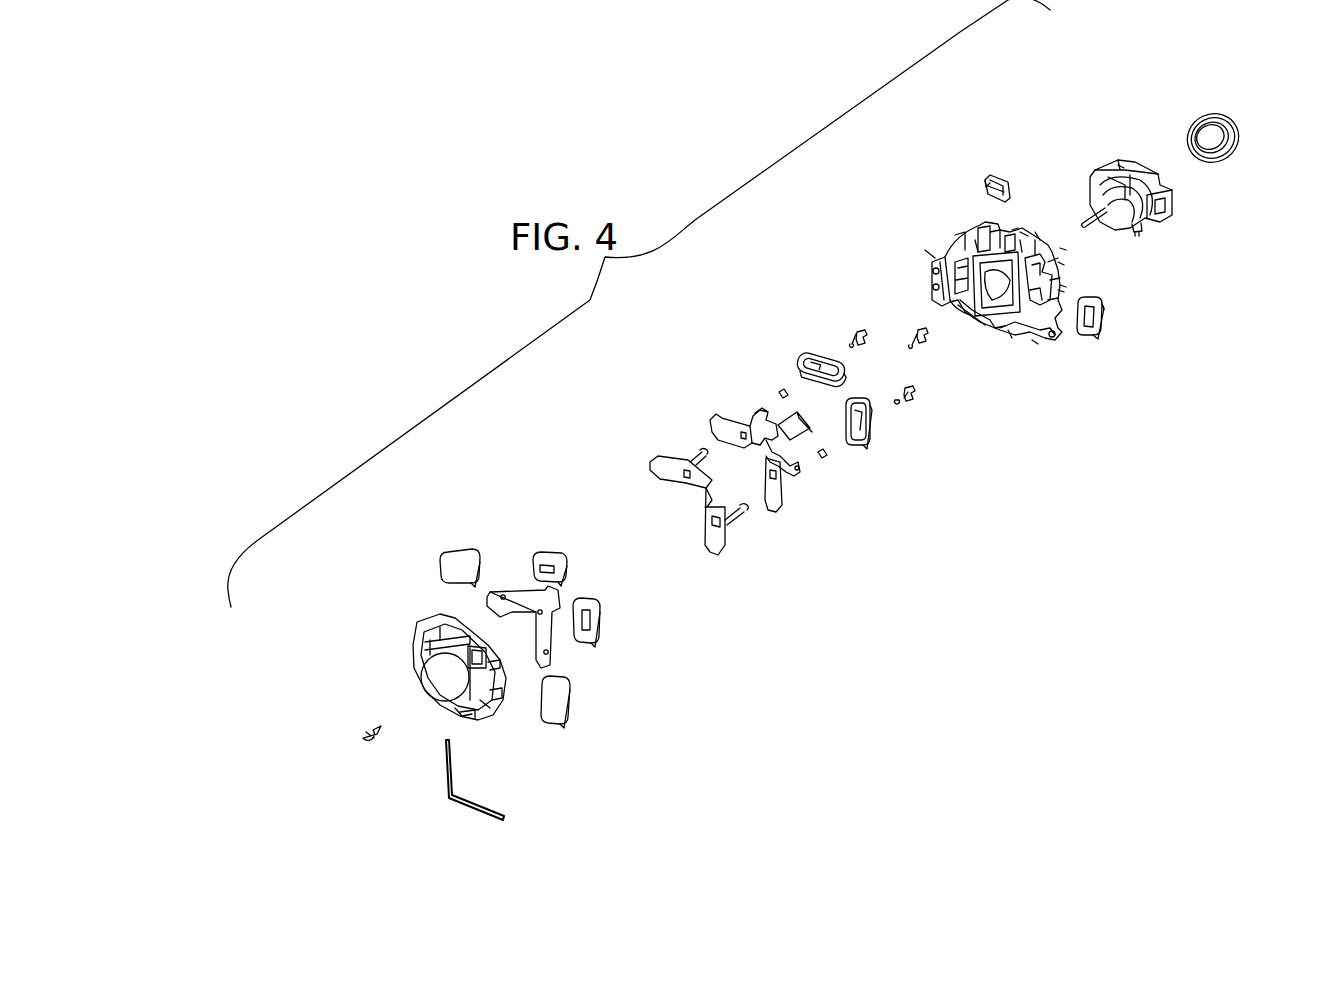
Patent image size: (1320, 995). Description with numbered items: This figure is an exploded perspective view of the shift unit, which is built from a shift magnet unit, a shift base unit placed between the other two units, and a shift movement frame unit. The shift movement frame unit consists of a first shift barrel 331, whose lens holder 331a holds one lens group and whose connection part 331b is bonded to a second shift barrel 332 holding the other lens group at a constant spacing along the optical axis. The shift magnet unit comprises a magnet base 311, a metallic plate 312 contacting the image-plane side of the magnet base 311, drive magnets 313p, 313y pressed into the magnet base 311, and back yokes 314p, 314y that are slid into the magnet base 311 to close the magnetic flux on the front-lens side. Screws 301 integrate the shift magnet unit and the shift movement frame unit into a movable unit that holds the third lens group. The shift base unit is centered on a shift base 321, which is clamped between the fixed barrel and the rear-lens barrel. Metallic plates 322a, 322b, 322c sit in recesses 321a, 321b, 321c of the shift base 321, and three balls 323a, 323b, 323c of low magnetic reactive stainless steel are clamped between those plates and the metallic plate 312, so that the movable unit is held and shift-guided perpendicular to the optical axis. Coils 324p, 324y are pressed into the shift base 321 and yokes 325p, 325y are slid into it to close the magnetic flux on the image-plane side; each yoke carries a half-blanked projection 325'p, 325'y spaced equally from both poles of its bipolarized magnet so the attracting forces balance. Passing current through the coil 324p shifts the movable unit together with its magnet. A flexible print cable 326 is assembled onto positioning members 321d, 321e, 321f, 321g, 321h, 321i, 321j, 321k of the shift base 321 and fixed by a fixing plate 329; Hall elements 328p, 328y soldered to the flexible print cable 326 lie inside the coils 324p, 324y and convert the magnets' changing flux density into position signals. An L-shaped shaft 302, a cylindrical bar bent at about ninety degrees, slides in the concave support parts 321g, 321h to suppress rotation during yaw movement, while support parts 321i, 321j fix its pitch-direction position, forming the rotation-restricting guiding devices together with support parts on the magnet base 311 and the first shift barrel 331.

The screws 301 is at (367, 745).
The L-shaped shaft 302 is at (462, 802).
The magnet base 311 is at (420, 632).
The metallic plate 312 is at (497, 592).
The drive magnet 313p is at (555, 548).
The drive magnet 313y is at (600, 640).
The back yoke 314p is at (445, 553).
The back yoke 314y is at (548, 726).
The shift base 321 is at (950, 240).
The recess 321a is at (1035, 342).
The recess 321b is at (1062, 248).
The recess 321c is at (925, 248).
The positioning member 321d is at (1140, 309).
The positioning member 321e is at (1062, 286).
The positioning member 321f is at (1010, 332).
The concave support part 321g is at (1060, 263).
The concave support part 321h is at (955, 235).
The support part 321i is at (1020, 232).
The support part 321j is at (1015, 230).
The positioning member 321k is at (1035, 234).
The metallic plate 322a is at (908, 404).
The metallic plate 322b is at (920, 348).
The metallic plate 322c is at (860, 332).
The ball 323a is at (896, 405).
The ball 323b is at (915, 402).
The ball 323c is at (849, 346).
The coil 324p is at (800, 366).
The coil 324y is at (862, 446).
The yoke 325p is at (1000, 172).
The projection 325'p is at (974, 143).
The yoke 325y is at (1104, 325).
The projection 325'y is at (1106, 365).
The flexible print cable 326 is at (776, 514).
The Hall element 328p is at (778, 392).
The Hall element 328y is at (822, 458).
The fixing plate 329 is at (712, 560).
The first shift barrel 331 is at (1140, 226).
The lens holder 331a is at (1144, 226).
The connection part 331b is at (1120, 165).
The second shift barrel 332 is at (1237, 150).